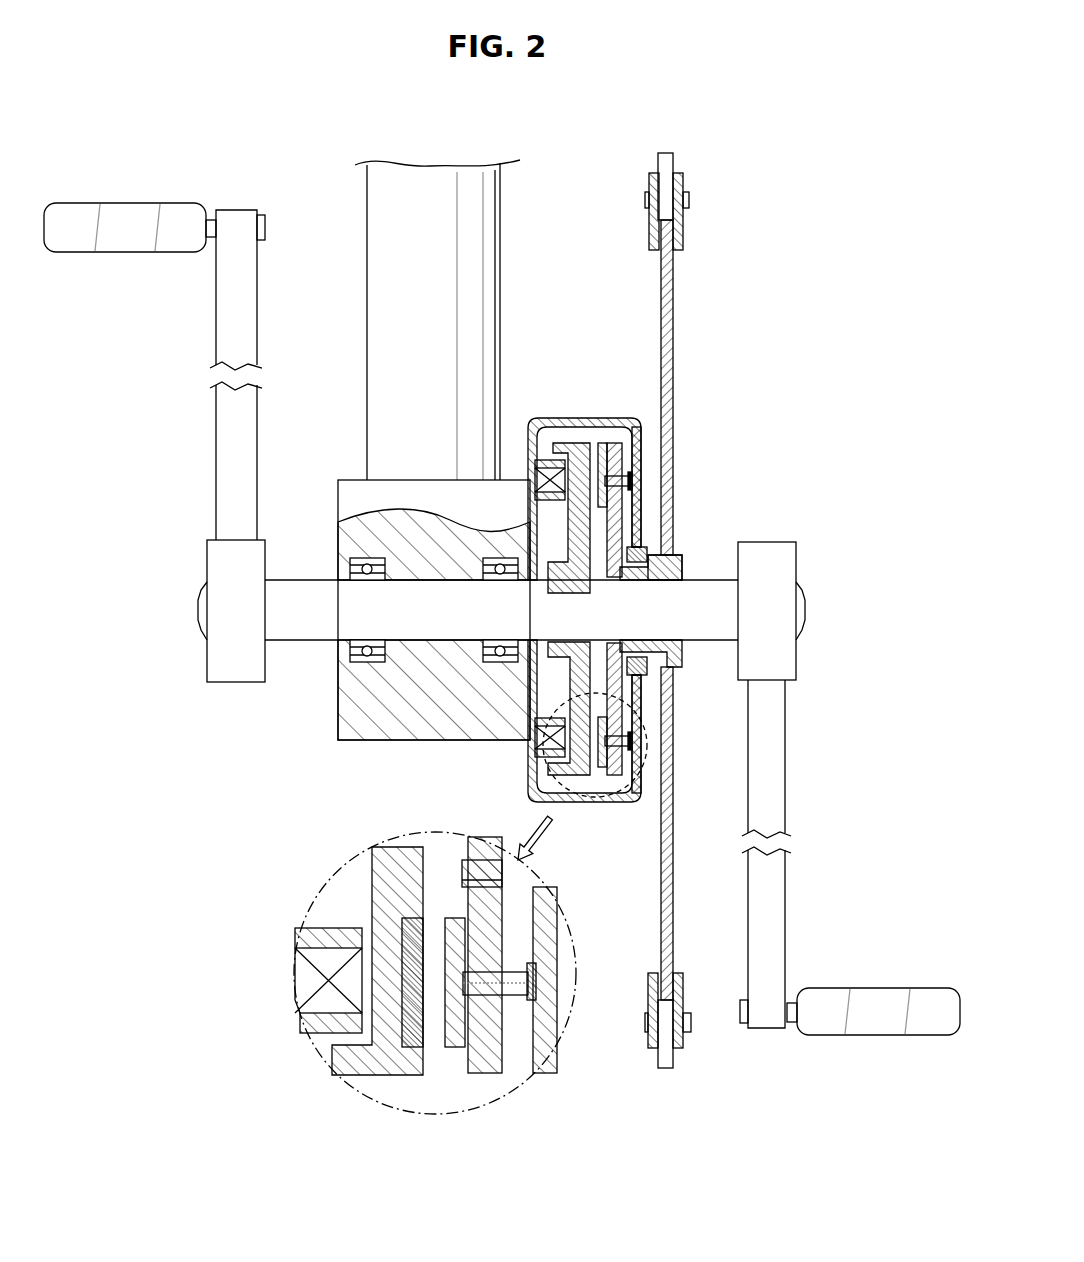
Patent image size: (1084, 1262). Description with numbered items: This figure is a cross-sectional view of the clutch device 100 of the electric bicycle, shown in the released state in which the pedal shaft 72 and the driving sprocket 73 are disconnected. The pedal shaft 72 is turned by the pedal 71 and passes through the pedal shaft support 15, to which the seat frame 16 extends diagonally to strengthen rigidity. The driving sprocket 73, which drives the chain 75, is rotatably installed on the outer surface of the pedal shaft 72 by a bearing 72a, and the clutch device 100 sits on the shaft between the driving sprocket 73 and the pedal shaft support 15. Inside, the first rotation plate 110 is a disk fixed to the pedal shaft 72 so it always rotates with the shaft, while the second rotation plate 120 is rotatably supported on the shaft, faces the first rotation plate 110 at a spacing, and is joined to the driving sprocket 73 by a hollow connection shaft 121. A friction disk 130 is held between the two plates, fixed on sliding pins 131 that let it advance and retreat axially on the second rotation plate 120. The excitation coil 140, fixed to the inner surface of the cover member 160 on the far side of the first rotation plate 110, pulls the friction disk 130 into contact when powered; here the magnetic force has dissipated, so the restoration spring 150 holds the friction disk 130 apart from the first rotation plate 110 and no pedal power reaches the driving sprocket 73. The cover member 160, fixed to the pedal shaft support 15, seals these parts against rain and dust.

The pedal shaft support 15 is at (372, 742).
The seat frame 16 is at (478, 266).
The pedal 71 is at (128, 212).
The pedal shaft 72 is at (300, 640).
The bearing 72a is at (657, 570).
The driving sprocket 73 is at (673, 320).
The chain 75 is at (666, 153).
The clutch device 100 is at (579, 398).
The first rotation plate 110 is at (553, 418).
The second rotation plate 120 is at (632, 417).
The hollow connection shaft 121 is at (672, 555).
The friction disk 130 is at (612, 417).
The sliding pin 131 is at (631, 474).
The excitation coil 140 is at (540, 470).
The restoration spring 150 is at (637, 512).
The cover member 160 is at (641, 423).